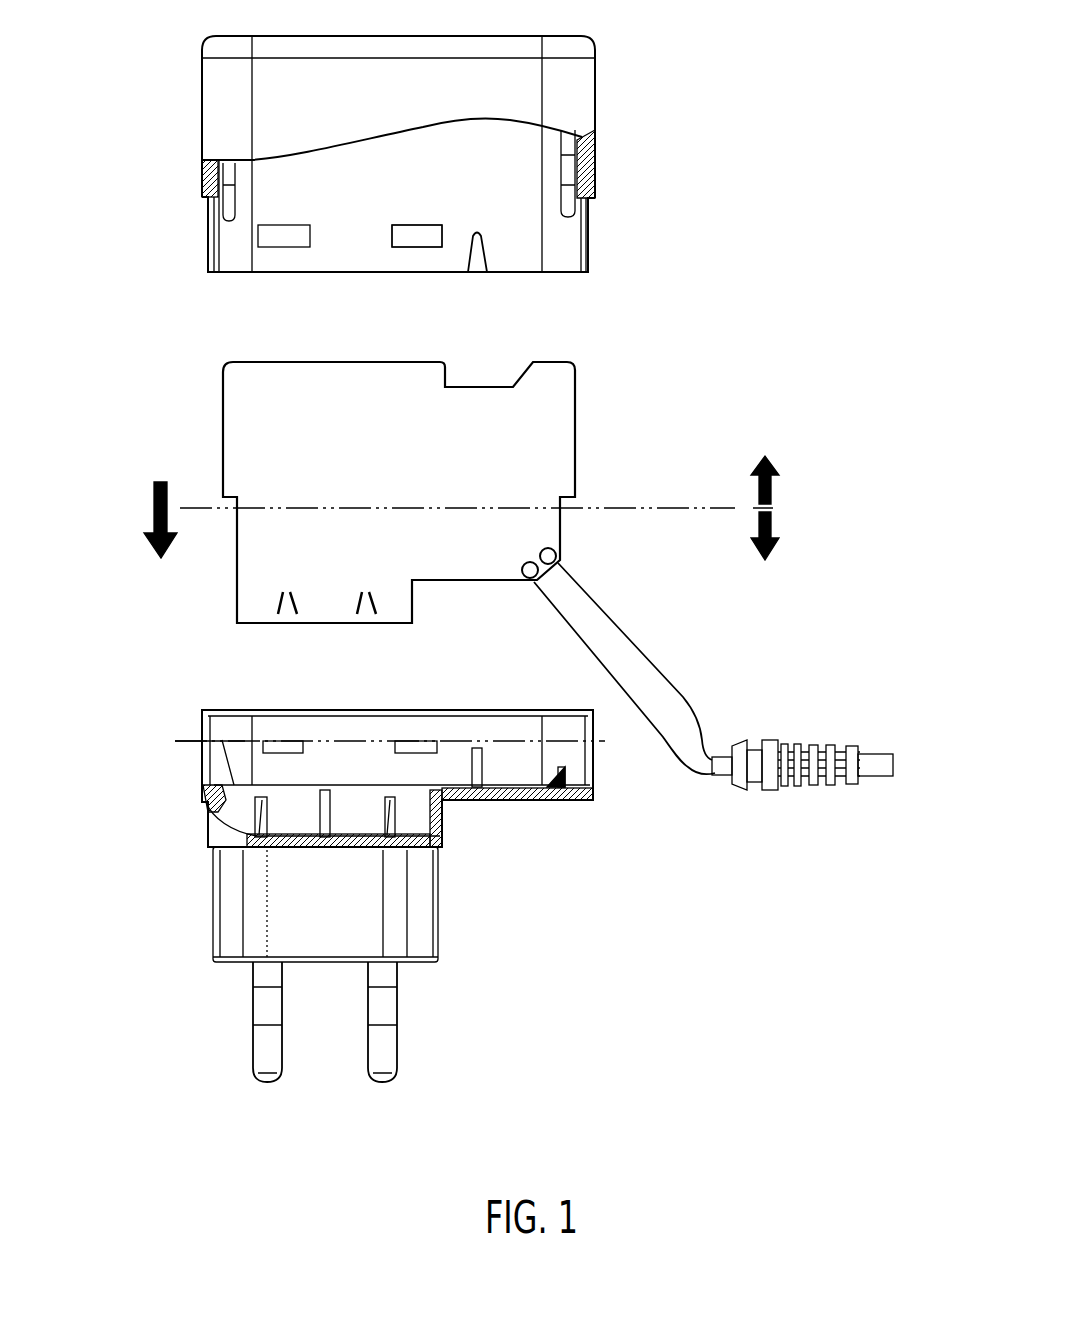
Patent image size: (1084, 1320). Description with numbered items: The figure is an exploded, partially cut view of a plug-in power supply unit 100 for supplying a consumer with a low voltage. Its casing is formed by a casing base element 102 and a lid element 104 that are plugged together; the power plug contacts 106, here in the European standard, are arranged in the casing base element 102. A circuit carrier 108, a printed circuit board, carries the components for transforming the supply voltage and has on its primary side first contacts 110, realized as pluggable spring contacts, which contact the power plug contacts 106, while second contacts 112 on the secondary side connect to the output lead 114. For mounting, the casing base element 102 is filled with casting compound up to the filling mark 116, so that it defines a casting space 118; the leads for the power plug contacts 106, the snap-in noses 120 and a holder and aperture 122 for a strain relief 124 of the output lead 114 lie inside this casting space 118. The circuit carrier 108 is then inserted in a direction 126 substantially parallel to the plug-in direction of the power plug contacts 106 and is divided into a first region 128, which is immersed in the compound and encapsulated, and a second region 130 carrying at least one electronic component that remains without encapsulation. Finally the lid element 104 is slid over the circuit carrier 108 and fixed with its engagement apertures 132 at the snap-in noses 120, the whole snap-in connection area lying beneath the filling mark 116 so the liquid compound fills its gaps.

The power supply unit 100 is at (608, 1016).
The casing base element 102 is at (443, 826).
The lid element 104 is at (596, 150).
The power plug contacts 106 is at (386, 1057).
The circuit carrier 108 is at (558, 449).
The first contacts 110 is at (277, 614).
The second contacts 112 is at (556, 552).
The output lead 114 is at (681, 690).
The filling mark 116 is at (182, 739).
The casting space 118 is at (178, 740).
The snap-in noses 120 is at (408, 744).
The aperture 122 is at (578, 768).
The strain relief 124 is at (876, 760).
The direction 126 is at (153, 512).
The first region 128 is at (774, 530).
The second region 130 is at (774, 488).
The engagement apertures 132 is at (412, 248).